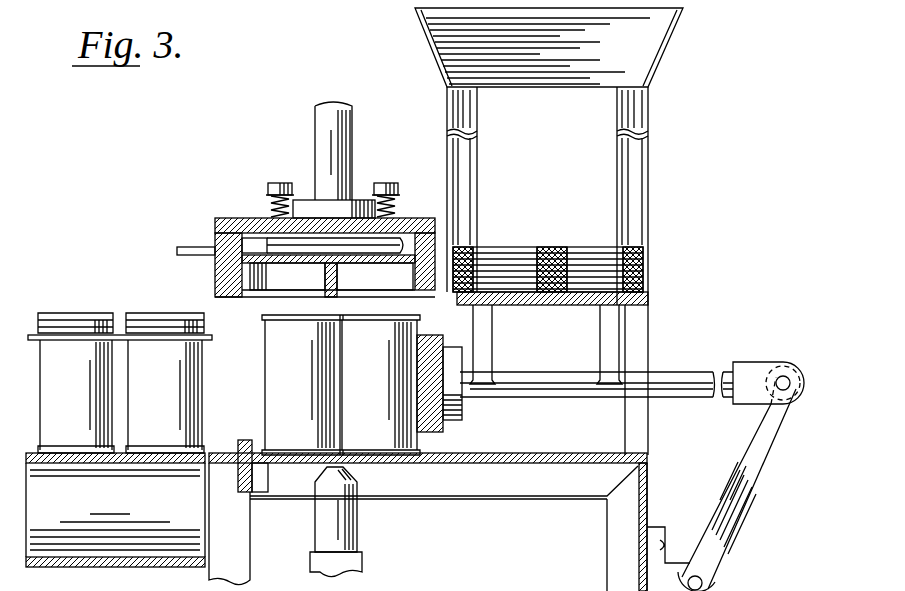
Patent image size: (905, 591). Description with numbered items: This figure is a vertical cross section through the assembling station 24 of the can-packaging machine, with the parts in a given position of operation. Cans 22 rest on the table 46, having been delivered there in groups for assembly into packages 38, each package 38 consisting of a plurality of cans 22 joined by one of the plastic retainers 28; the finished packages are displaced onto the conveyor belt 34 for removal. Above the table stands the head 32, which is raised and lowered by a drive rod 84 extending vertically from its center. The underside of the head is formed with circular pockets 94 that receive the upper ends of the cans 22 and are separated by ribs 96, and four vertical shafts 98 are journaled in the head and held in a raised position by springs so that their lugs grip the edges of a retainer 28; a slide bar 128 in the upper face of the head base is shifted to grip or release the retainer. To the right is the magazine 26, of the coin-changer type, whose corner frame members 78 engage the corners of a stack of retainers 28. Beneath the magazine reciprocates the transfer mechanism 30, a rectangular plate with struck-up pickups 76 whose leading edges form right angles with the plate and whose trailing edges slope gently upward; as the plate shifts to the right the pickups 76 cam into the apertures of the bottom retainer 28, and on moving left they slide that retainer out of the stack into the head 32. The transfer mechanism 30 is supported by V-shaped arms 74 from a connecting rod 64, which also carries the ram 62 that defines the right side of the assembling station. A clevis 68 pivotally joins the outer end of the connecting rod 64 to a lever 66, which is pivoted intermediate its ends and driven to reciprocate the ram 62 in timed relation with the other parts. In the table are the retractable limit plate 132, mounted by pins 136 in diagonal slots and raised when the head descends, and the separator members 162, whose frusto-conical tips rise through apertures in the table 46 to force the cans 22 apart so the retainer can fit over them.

The cans 22 is at (341, 385).
The assembling station 24 is at (218, 214).
The magazine 26 is at (652, 160).
The plastic retainers 28 is at (628, 245).
The transfer mechanism 30 is at (650, 300).
The head 32 is at (205, 214).
The conveyor belt 34 is at (175, 465).
The packages 38 is at (122, 300).
The table 46 is at (517, 464).
The ram 62 is at (435, 432).
The connecting rod 64 is at (582, 390).
The lever 66 is at (745, 440).
The clevis 68 is at (760, 372).
The V-shaped arms 74 is at (480, 352).
The pickups 76 is at (548, 258).
The corner frame members 78 is at (495, 336).
The drive rod 84 is at (327, 122).
The pockets 94 is at (300, 287).
The ribs 96 is at (327, 284).
The vertical shafts 98 is at (290, 195).
The slide bar 128 is at (193, 257).
The limit plate 132 is at (240, 440).
The pins 136 is at (233, 478).
The separator members 162 is at (345, 528).